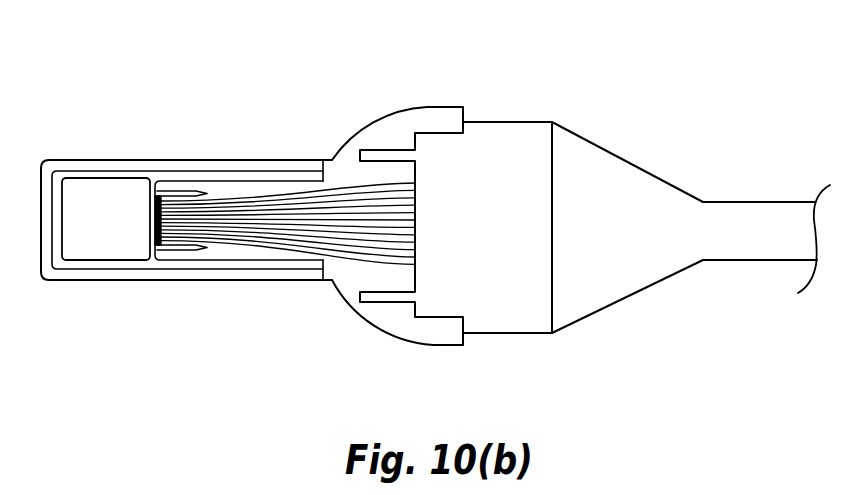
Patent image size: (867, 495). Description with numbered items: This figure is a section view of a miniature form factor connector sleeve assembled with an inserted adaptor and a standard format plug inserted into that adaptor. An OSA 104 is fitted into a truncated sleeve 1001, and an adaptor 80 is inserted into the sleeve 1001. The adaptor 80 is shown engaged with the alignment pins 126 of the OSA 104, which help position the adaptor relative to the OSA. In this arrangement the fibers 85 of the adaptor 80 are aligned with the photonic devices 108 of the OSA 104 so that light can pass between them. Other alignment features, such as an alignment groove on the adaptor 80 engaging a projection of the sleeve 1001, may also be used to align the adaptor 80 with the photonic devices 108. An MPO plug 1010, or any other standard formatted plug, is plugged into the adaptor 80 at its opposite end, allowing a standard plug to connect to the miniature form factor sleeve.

The truncated sleeve 1001 is at (97, 278).
The OSA 104 is at (88, 190).
The photonic devices 108 is at (153, 216).
The alignment pins 126 is at (177, 190).
The fibers 85 is at (300, 228).
The adaptor 80 is at (398, 326).
The MPO plug 1010 is at (543, 122).